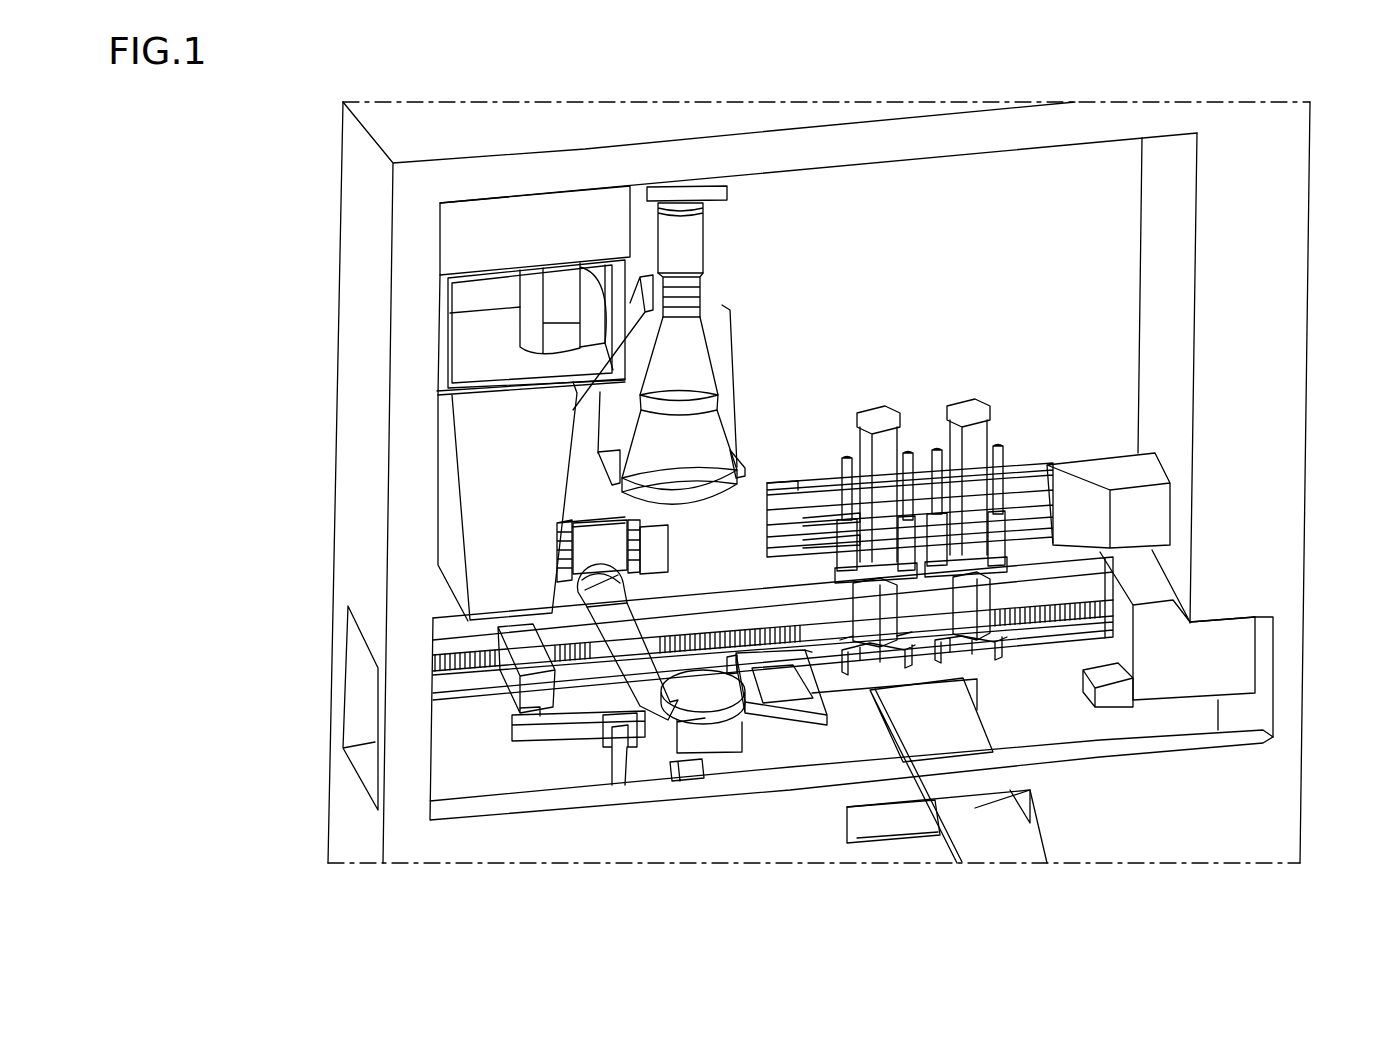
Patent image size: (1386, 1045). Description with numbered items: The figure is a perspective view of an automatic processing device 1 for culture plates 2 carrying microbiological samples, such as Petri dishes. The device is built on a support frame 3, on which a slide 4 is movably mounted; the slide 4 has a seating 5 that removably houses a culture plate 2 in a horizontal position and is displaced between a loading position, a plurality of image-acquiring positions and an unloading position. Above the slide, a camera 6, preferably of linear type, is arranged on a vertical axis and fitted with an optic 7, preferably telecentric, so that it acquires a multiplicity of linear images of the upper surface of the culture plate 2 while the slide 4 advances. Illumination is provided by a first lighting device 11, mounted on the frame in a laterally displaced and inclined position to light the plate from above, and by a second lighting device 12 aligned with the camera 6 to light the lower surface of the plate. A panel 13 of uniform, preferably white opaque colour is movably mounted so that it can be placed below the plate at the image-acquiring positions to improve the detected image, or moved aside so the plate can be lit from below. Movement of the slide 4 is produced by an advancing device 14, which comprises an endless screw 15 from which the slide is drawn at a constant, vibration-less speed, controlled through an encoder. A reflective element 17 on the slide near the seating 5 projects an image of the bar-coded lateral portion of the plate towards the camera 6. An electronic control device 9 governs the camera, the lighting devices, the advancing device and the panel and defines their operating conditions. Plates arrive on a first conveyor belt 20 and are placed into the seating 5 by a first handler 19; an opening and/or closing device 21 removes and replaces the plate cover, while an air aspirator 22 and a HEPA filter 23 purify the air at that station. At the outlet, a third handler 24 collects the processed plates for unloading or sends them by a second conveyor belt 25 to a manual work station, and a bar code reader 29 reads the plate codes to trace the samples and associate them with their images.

The automatic processing device 1 is at (872, 320).
The culture plate 2 is at (628, 748).
The support frame 3 is at (452, 788).
The slide 4 is at (805, 718).
The seating 5 is at (745, 690).
The camera 6 is at (712, 237).
The optic 7 is at (683, 353).
The electronic control device 9 is at (1212, 660).
The first lighting device 11 is at (623, 660).
The second lighting device 12 is at (685, 772).
The panel 13 is at (700, 738).
The advancing device 14 is at (949, 863).
The endless screw 15 is at (1035, 607).
The reflective element 17 is at (752, 702).
The first handler 19 is at (877, 612).
The first conveyor belt 20 is at (890, 817).
The opening and/or closing device 21 is at (509, 681).
The air aspirator 22 is at (442, 488).
The filter 23 is at (558, 300).
The third handler 24 is at (973, 607).
The second conveyor belt 25 is at (975, 808).
The bar code reader 29 is at (1107, 695).